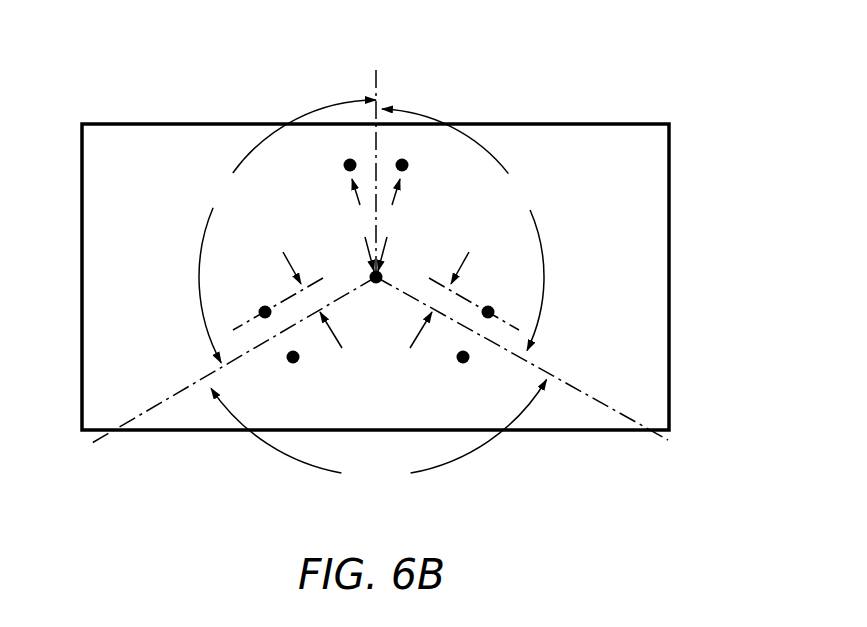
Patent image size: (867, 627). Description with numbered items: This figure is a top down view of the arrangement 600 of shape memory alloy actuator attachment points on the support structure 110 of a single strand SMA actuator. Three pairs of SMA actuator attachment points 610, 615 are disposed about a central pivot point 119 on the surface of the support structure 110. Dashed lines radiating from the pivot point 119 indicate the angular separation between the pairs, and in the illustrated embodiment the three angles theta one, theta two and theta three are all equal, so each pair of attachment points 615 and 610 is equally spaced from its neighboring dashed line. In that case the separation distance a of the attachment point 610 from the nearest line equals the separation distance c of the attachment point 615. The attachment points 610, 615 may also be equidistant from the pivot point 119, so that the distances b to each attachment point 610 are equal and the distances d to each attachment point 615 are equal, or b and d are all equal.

The layout of light source positions 600 is at (417, 264).
The support structure 110 is at (643, 308).
The pivot point 119 is at (381, 273).
The SMA actuator attachment point 610 is at (410, 164).
The SMA actuator attachment point 615 is at (342, 163).